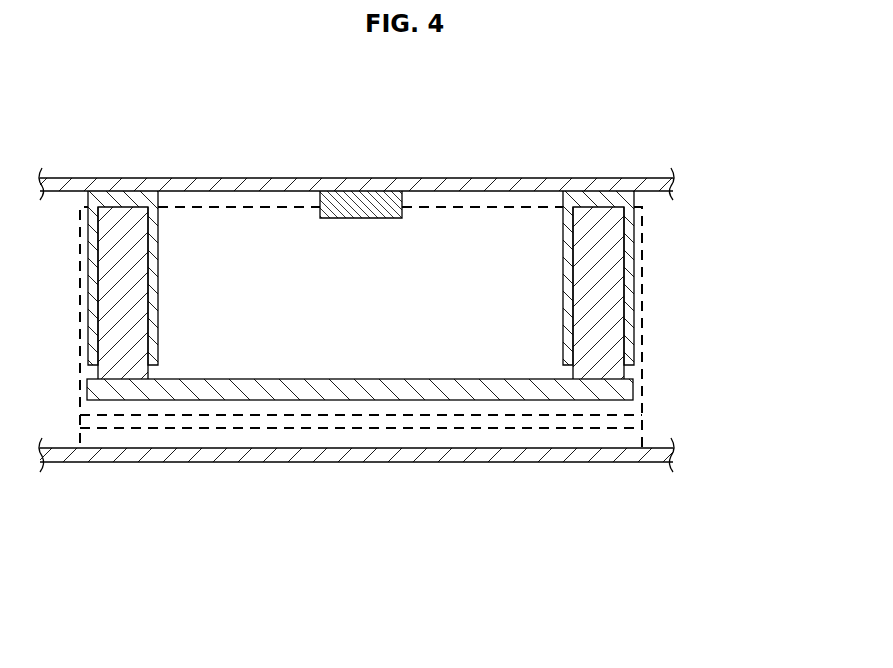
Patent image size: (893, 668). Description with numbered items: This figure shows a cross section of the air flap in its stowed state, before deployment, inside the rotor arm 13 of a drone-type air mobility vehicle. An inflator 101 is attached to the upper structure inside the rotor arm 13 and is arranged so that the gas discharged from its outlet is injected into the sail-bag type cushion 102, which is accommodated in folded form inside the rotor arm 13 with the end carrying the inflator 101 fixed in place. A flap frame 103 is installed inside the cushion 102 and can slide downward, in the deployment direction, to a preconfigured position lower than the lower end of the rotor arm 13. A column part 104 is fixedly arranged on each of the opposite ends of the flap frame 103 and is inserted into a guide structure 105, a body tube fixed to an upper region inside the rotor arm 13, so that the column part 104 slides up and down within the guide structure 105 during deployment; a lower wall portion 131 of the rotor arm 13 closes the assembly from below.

The rotor arm 13 is at (505, 178).
The lower substrate plate 131 is at (249, 462).
The inflator 101 is at (358, 206).
The sail-bag type cushion 102 is at (430, 428).
The flap frame 103 is at (558, 390).
The column part 104 is at (608, 335).
The guide structure 105 is at (629, 265).